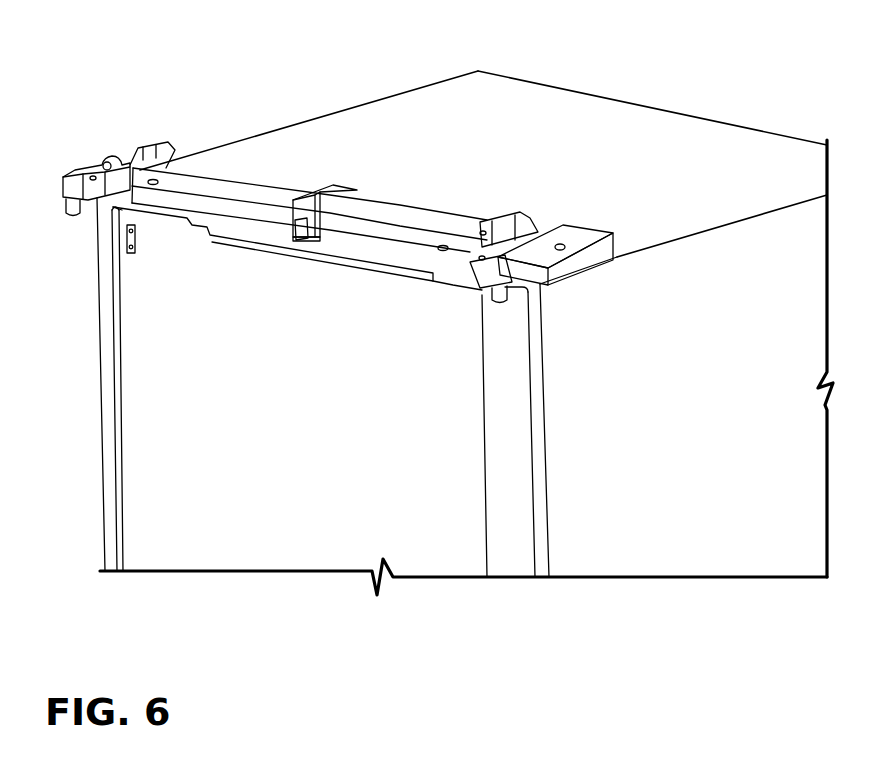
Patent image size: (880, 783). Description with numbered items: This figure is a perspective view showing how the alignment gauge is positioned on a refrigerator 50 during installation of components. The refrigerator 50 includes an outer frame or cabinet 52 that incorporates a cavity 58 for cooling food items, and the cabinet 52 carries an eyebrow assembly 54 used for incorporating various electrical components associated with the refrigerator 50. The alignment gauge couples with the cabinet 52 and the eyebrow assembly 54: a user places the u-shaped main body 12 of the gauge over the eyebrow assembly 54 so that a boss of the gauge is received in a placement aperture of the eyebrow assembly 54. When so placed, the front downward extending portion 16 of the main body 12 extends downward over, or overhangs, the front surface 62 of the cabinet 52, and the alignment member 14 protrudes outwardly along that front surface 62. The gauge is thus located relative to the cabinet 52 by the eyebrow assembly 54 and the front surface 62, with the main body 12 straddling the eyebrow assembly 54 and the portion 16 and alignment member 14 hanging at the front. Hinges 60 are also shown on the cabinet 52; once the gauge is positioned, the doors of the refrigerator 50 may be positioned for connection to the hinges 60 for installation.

The refrigerator 50 is at (641, 99).
The cabinet 52 is at (337, 132).
The eyebrow assembly 54 is at (432, 210).
The main body 12 is at (336, 186).
The alignment member 14 is at (302, 241).
The front downward extending portion 16 is at (300, 220).
The cavity 58 is at (158, 317).
The hinge 60 is at (118, 166).
The front surface 62 is at (357, 247).